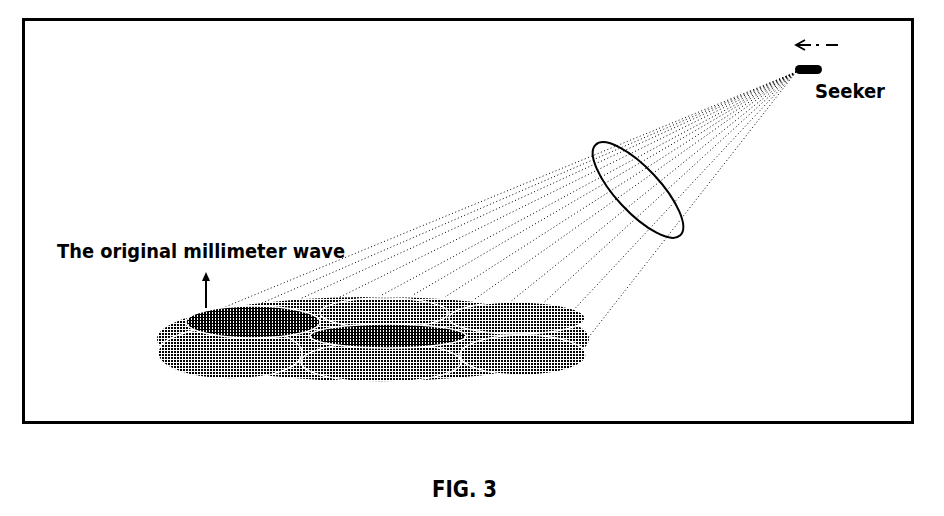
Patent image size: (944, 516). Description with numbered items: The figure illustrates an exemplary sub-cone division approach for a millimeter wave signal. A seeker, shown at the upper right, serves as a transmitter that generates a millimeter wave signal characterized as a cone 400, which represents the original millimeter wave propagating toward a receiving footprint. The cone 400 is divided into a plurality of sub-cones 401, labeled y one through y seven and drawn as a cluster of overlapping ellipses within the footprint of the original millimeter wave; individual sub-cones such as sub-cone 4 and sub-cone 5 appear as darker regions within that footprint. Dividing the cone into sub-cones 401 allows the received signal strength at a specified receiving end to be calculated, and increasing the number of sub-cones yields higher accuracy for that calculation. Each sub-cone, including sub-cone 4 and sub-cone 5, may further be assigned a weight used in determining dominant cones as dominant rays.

The cone 400 is at (603, 148).
The sub-cones 401 is at (460, 349).
The sub-cone 4 is at (388, 336).
The sub-cone 5 is at (253, 322).